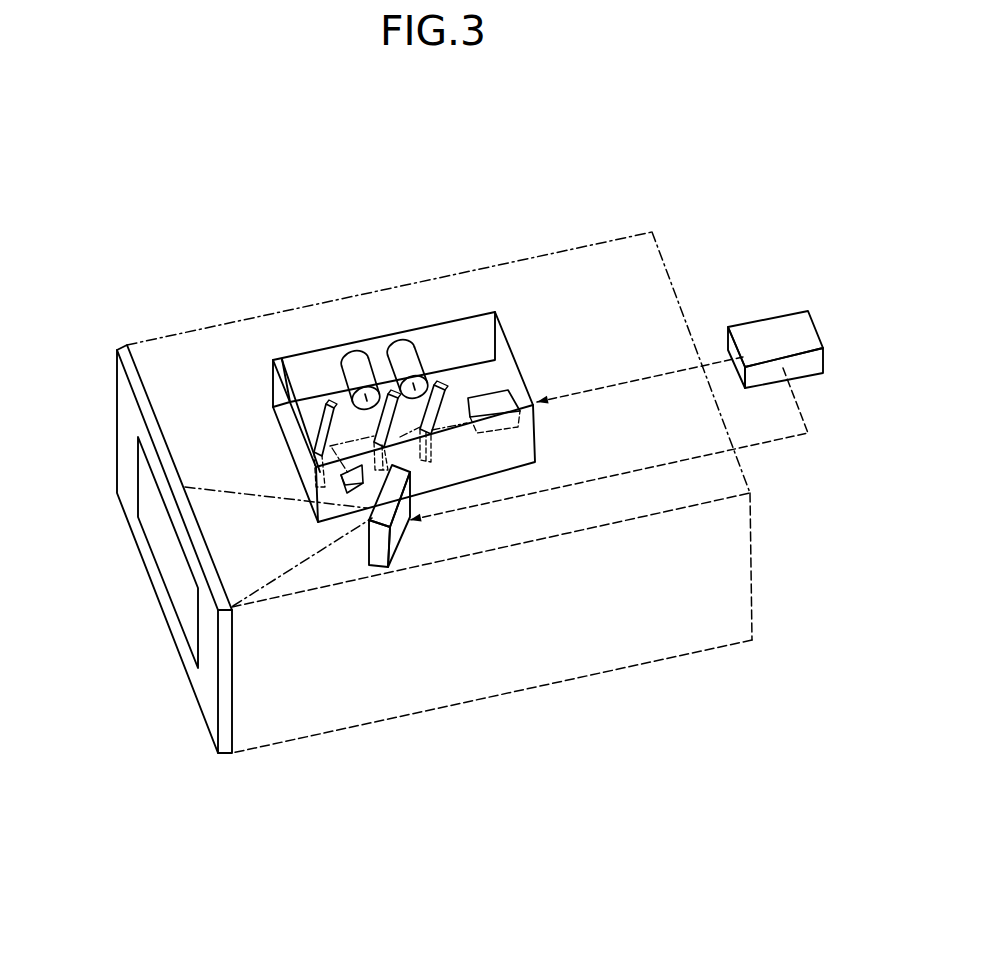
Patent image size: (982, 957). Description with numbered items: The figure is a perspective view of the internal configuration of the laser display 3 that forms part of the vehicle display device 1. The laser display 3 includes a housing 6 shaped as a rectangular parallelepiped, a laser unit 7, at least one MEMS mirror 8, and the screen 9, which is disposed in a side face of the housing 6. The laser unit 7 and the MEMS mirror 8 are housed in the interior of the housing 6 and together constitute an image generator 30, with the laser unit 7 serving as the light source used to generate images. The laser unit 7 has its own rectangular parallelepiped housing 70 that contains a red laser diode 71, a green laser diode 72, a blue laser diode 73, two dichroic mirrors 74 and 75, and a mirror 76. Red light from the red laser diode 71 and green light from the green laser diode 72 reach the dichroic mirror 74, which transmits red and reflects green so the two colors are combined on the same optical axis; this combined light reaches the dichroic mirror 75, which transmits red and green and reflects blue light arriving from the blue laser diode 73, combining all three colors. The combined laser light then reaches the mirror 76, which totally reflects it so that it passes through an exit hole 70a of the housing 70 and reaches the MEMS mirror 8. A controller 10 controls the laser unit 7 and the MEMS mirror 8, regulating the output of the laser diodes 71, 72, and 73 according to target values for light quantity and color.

The vehicle display device 1 is at (165, 140).
The laser display 3 is at (450, 235).
The image generator 30 is at (353, 180).
The housing 6 is at (172, 333).
The laser unit 7 is at (462, 316).
The MEMS mirror 8 is at (365, 544).
The screen 9 is at (182, 577).
The controller 10 is at (777, 328).
The housing 70 is at (388, 335).
The exit hole 70a is at (346, 496).
The red laser diode 71 is at (490, 392).
The green laser diode 72 is at (408, 345).
The blue laser diode 73 is at (358, 353).
The dichroic mirror 74 is at (442, 390).
The dichroic mirror 75 is at (378, 402).
The mirror 76 is at (328, 407).